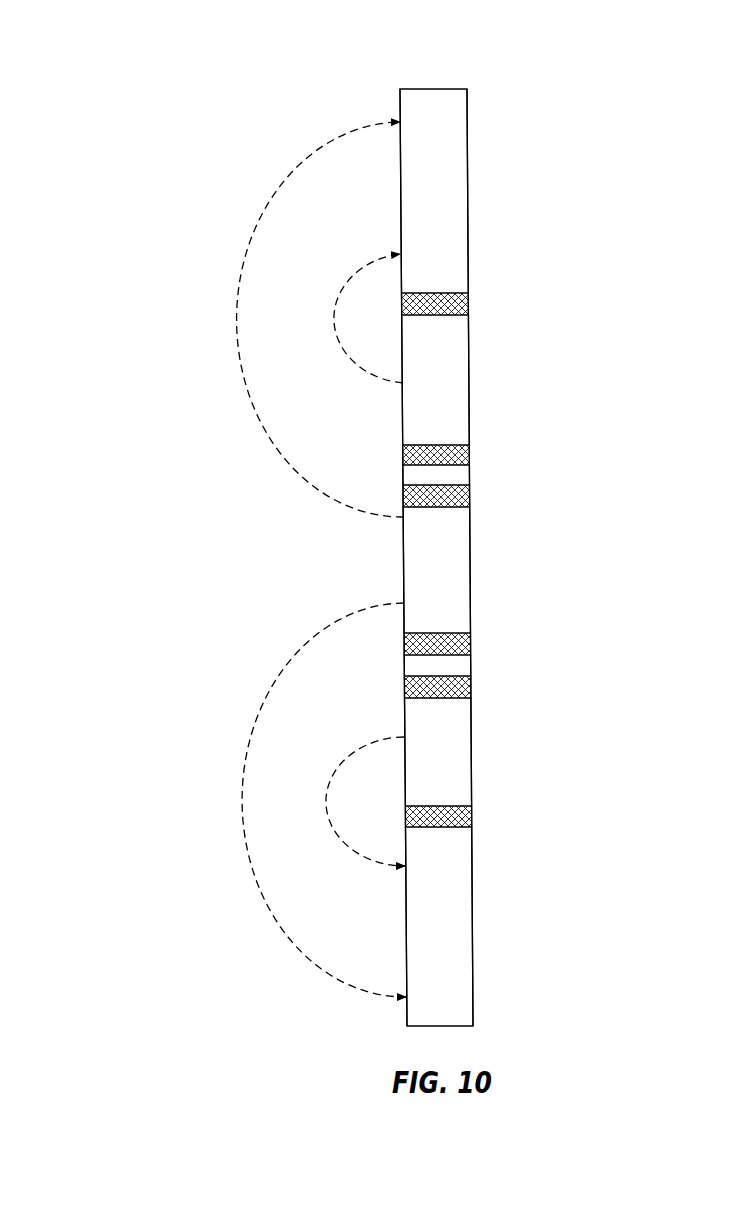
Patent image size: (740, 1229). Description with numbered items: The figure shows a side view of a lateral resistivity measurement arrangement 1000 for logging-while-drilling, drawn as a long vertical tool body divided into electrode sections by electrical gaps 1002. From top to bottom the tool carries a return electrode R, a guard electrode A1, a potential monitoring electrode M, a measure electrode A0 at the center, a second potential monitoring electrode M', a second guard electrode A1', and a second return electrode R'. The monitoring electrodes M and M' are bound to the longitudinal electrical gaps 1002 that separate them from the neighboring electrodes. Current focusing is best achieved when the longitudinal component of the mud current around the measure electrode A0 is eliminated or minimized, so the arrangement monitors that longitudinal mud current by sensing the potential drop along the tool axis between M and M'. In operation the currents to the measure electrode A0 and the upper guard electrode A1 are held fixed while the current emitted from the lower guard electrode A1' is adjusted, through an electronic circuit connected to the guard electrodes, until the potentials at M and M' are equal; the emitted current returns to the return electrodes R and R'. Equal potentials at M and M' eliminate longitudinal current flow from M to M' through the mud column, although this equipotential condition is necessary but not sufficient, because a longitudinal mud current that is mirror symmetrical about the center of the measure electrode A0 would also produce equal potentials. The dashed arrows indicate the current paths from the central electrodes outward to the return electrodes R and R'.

The calibration strip / test pattern 1000 is at (519, 53).
The electrical gaps 1002 is at (468, 303).
The return electrode R is at (462, 191).
The guard electrode A1 is at (469, 380).
The potential monitoring electrode M is at (468, 468).
The measure electrode A0 is at (470, 572).
The potential monitoring electrode M' is at (472, 656).
The guard electrode A1' is at (476, 752).
The return electrode R' is at (471, 926).